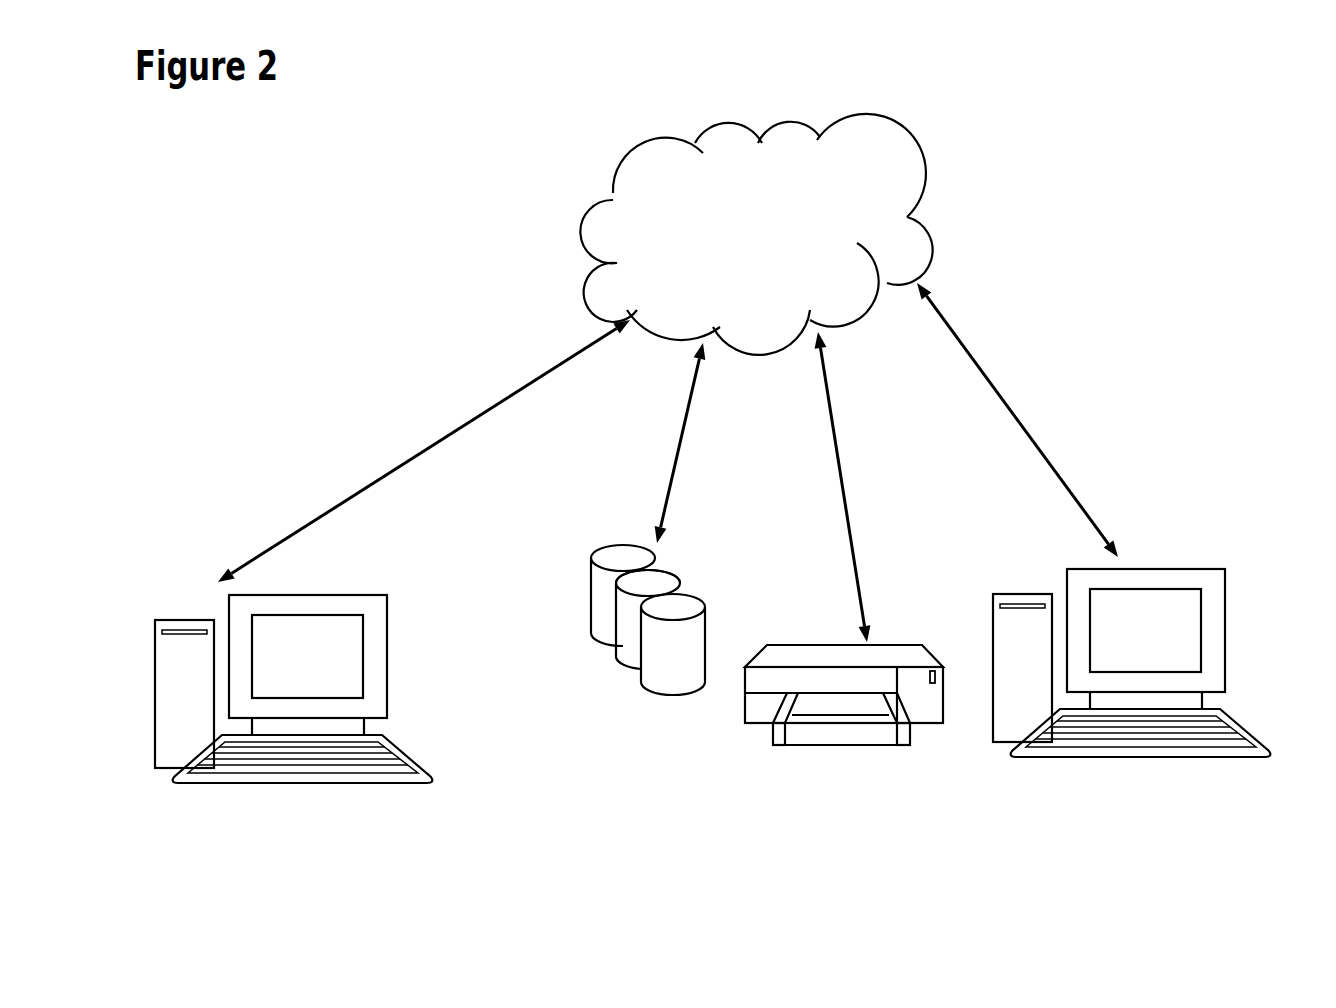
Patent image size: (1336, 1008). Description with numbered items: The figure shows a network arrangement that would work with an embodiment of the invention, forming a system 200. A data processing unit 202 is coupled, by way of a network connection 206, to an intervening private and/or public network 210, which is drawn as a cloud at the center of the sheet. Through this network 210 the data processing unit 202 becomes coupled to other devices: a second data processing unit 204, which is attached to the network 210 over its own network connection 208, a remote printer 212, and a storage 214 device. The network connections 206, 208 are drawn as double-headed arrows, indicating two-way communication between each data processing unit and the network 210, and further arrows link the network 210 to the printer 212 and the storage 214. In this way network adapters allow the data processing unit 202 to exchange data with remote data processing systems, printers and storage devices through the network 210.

The system 200 is at (1043, 96).
The data processing unit 202 is at (293, 734).
The data processing unit 204 is at (1131, 703).
The network connection 206 is at (424, 451).
The network connection 208 is at (1053, 420).
The network 210 is at (756, 234).
The printer 212 is at (844, 562).
The storage 214 is at (631, 546).